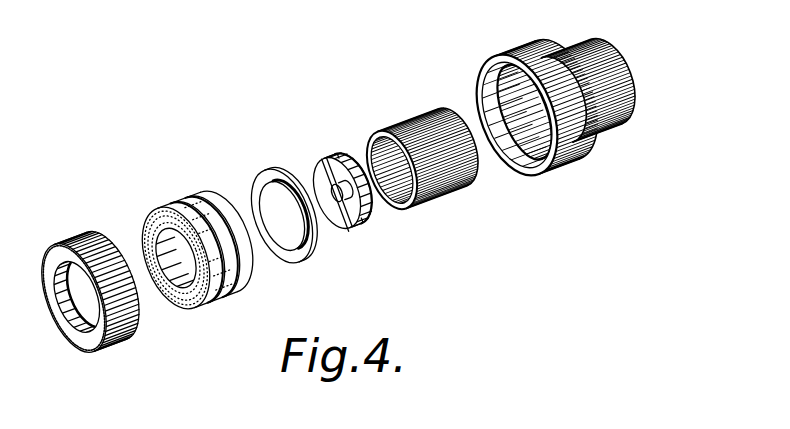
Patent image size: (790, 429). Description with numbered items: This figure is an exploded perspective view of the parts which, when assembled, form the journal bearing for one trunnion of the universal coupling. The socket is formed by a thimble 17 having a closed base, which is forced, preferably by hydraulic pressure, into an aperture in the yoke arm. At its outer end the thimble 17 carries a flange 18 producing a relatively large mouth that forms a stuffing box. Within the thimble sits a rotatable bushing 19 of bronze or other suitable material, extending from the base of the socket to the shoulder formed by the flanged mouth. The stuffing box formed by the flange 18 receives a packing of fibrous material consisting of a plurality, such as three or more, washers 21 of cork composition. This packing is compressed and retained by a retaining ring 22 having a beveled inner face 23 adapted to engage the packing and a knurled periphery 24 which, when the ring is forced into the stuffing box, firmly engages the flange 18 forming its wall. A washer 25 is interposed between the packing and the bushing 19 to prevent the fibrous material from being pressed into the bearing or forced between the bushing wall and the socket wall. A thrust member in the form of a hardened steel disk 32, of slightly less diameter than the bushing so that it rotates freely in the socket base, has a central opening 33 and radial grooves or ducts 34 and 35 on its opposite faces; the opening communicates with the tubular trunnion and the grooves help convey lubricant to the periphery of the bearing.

The thimble 17 is at (618, 130).
The flange 18 is at (478, 84).
The rotatable bushing 19 is at (455, 190).
The washers of cork composition 21 is at (249, 266).
The retaining ring 22 is at (78, 340).
The beveled inner face 23 is at (68, 290).
The knurled periphery 24 is at (130, 333).
The washer 25 is at (294, 254).
The disk 32 is at (347, 222).
The central opening 33 is at (332, 189).
The radial grooves or ducts 34 is at (336, 160).
The radial grooves or ducts 35 is at (365, 201).